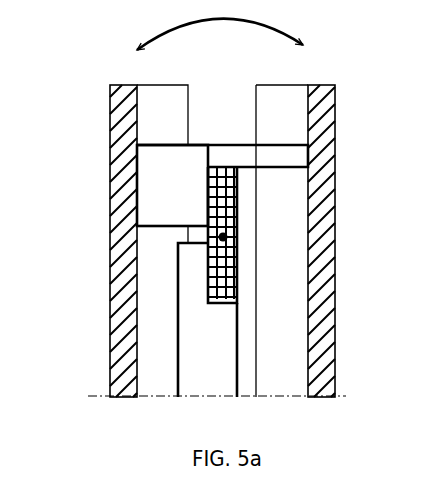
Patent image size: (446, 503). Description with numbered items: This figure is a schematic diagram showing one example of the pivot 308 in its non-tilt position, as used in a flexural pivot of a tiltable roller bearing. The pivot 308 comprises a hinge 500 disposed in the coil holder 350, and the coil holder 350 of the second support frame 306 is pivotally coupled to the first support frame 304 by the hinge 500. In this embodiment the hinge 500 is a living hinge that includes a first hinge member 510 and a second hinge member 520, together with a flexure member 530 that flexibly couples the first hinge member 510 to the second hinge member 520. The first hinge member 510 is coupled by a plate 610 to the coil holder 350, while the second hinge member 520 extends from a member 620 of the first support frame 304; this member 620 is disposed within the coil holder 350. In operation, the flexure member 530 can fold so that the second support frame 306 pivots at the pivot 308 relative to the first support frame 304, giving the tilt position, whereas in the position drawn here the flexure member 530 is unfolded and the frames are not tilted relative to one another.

The coil holder 350 is at (110, 99).
The plate 610 is at (218, 150).
The hinge 500 is at (248, 185).
The first hinge member 510 is at (192, 198).
The second hinge member 520 is at (193, 265).
The flexure member 530 is at (230, 218).
The pivot 308 is at (228, 239).
The second support frame 306 is at (110, 318).
The first support frame 304 is at (197, 352).
The member 620 is at (195, 384).